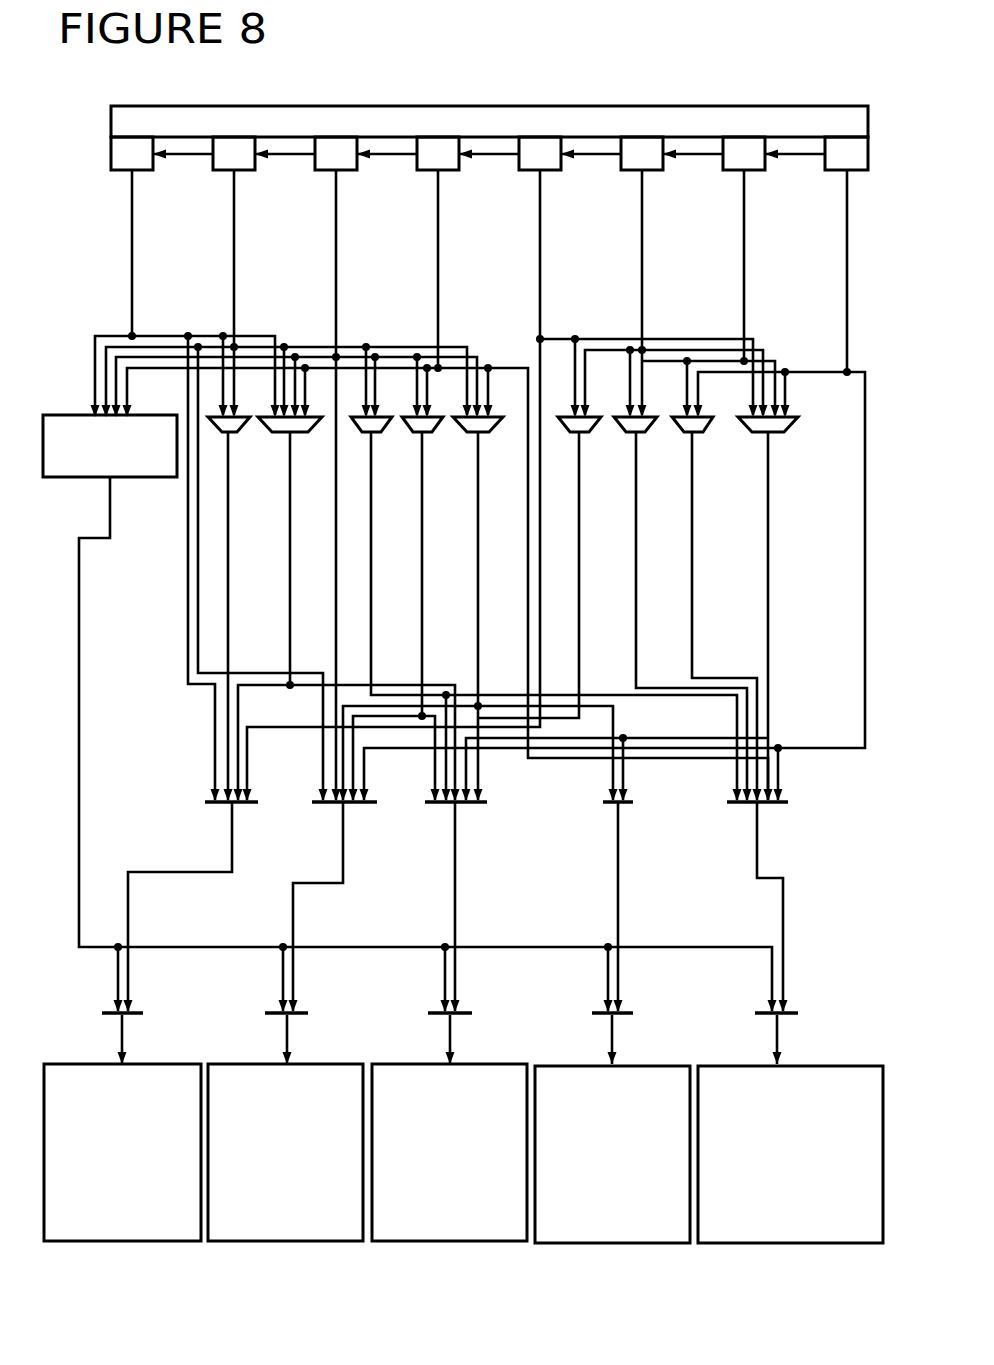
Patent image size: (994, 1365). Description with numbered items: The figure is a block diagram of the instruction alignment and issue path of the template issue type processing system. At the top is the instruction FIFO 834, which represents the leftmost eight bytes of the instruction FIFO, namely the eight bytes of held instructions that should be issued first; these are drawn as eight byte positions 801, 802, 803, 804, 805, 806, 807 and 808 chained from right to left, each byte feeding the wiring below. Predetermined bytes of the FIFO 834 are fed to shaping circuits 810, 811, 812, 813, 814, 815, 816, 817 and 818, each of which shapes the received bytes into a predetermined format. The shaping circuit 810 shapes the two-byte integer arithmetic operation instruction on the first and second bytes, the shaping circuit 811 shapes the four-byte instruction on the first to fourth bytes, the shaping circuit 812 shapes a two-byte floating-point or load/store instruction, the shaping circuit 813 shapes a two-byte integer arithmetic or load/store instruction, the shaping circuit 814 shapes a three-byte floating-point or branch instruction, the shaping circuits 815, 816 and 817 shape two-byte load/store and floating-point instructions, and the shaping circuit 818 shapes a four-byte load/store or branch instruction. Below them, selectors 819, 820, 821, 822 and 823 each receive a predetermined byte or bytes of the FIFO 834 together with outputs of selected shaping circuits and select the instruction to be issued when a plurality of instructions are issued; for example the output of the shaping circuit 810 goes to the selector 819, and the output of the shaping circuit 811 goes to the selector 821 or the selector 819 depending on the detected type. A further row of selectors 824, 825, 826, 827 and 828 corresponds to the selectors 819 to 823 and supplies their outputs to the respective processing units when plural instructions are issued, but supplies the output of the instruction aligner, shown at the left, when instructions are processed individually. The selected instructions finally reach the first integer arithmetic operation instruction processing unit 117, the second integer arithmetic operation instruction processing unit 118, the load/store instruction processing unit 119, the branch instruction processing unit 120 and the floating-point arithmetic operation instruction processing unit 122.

The instruction FIFO 834 is at (242, 106).
The FIFO stage 1 801 is at (122, 172).
The FIFO stage 2 802 is at (224, 172).
The FIFO stage 3 803 is at (326, 172).
The FIFO stage 4 804 is at (428, 172).
The FIFO stage 5 805 is at (530, 172).
The FIFO stage 6 806 is at (632, 172).
The FIFO stage 7 807 is at (734, 172).
The FIFO stage 8 808 is at (836, 172).
The shaping circuit 810 is at (231, 434).
The shaping circuit 811 is at (294, 434).
The shaping circuit 812 is at (374, 434).
The shaping circuit 813 is at (425, 434).
The shaping circuit 814 is at (481, 434).
The shaping circuit 815 is at (582, 434).
The shaping circuit 816 is at (639, 434).
The shaping circuit 817 is at (695, 434).
The shaping circuit 818 is at (772, 434).
The selector 819 is at (82, 479).
The selector 820 is at (327, 806).
The selector 821 is at (440, 806).
The selector 822 is at (607, 806).
The selector 823 is at (740, 806).
The selector 824 is at (139, 1011).
The selector 825 is at (304, 1011).
The selector 826 is at (466, 1011).
The selector 827 is at (629, 1011).
The selector 828 is at (792, 1011).
The integer arithmetic operation instruction processing unit 117 is at (152, 1242).
The integer arithmetic operation instruction processing unit 118 is at (315, 1242).
The load/store instruction processing unit 119 is at (478, 1242).
The branch instruction processing unit 120 is at (640, 1244).
The floating-point arithmetic operation instruction processing unit 122 is at (820, 1244).